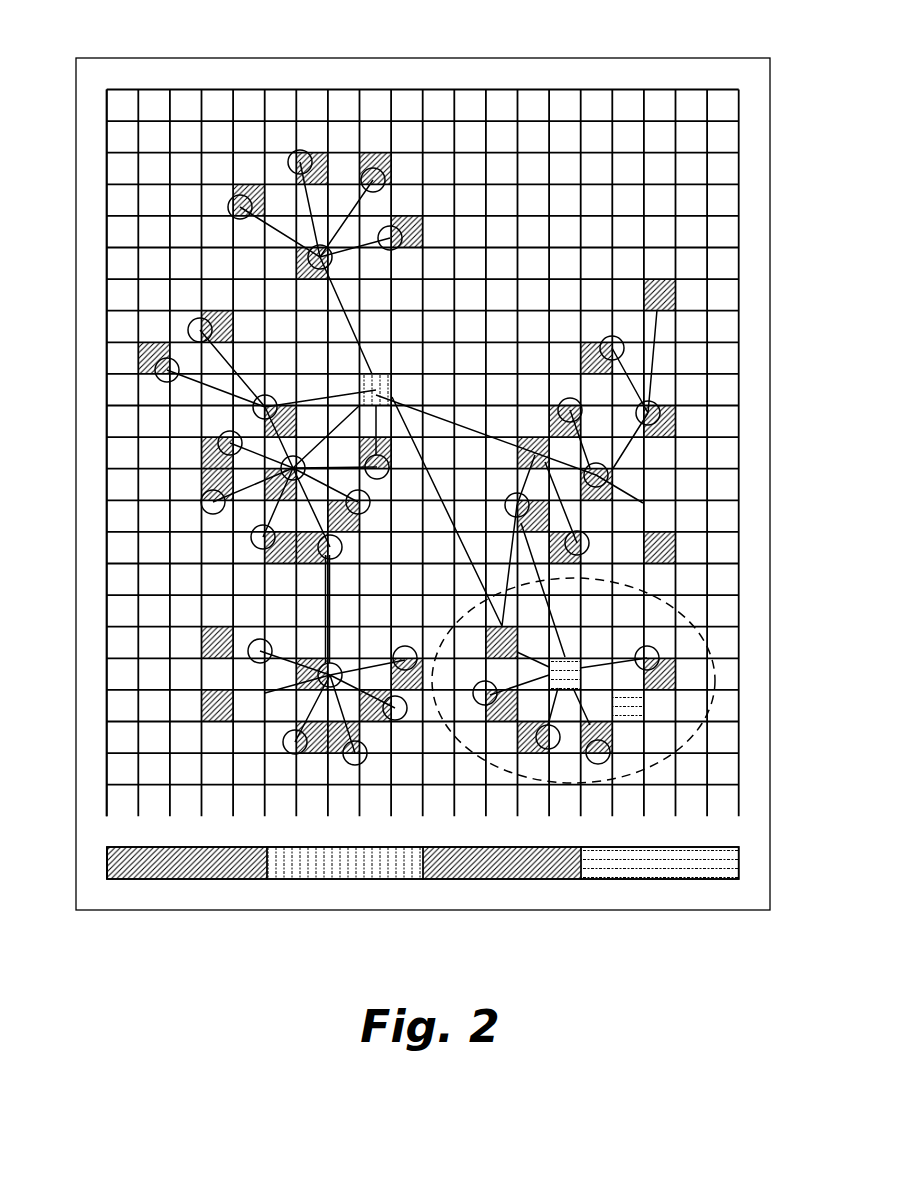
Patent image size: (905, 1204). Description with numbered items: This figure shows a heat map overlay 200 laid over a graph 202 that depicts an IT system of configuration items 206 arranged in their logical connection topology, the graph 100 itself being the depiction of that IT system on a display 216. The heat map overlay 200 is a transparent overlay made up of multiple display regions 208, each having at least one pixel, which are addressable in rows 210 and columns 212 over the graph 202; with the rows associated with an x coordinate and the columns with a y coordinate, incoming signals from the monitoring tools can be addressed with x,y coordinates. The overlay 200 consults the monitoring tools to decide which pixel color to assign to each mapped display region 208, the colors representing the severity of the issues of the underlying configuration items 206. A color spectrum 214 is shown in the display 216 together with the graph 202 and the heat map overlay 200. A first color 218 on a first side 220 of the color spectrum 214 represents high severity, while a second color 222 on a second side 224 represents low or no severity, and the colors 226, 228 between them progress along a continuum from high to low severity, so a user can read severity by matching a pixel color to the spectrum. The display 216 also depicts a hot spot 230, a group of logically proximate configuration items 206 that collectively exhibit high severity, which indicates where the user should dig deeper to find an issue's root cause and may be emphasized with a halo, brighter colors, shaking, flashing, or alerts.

The graph 100 is at (617, 183).
The heat map overlay 200 is at (386, 423).
The graph 202 is at (186, 200).
The configuration items 206 is at (229, 199).
The display regions 208 is at (394, 232).
The rows 210 is at (106, 199).
The columns 212 is at (502, 88).
The color spectrum 214 is at (425, 904).
The display 216 is at (590, 88).
The first color 218 is at (645, 880).
The first side 220 is at (739, 860).
The second color 222 is at (163, 879).
The second side 224 is at (107, 868).
The intermediate color 226 is at (345, 879).
The intermediate color 228 is at (502, 879).
The hot spot 230 is at (713, 667).